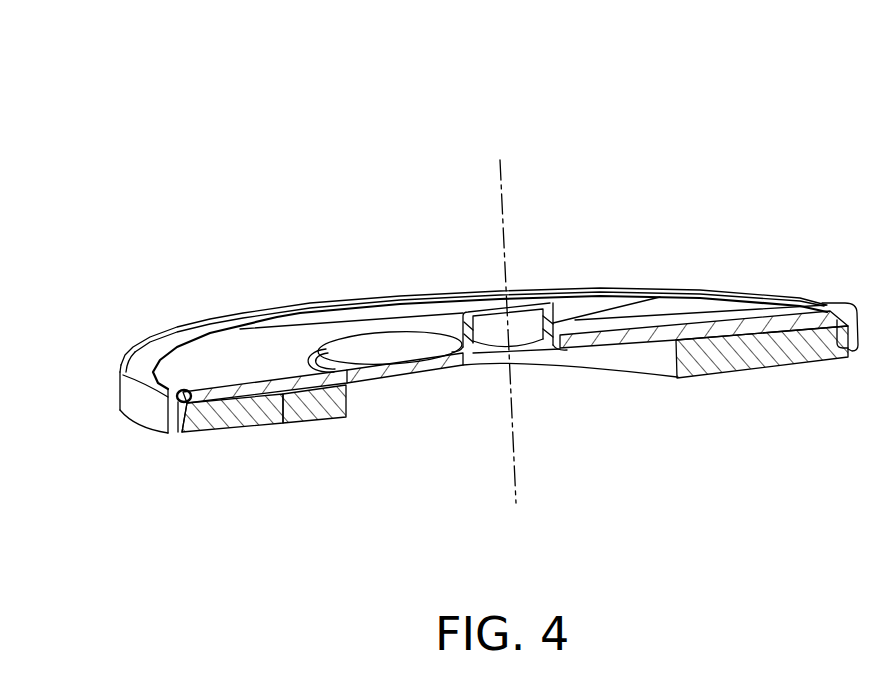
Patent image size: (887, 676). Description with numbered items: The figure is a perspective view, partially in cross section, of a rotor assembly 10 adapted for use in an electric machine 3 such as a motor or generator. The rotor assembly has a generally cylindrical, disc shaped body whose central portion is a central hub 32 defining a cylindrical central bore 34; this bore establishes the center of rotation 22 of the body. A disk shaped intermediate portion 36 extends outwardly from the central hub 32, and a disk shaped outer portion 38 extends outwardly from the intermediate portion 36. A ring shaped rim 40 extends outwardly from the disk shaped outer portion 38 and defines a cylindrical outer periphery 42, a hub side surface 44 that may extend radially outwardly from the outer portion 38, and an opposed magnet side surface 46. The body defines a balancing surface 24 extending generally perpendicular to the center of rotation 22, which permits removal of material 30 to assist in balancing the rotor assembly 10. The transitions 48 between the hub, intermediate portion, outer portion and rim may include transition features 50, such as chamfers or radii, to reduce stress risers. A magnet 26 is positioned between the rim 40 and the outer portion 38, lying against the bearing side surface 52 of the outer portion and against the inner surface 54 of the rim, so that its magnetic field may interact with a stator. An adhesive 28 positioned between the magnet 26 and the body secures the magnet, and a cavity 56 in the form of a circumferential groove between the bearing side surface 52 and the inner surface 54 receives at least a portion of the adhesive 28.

The rotor assembly 10 is at (178, 92).
The electric machine 3 is at (767, 86).
The center of rotation 22 is at (520, 485).
The balancing surface 24 is at (121, 362).
The magnet 26 is at (340, 423).
The adhesive 28 is at (178, 432).
The material 30 is at (173, 337).
The central hub 32 is at (552, 306).
The central bore 34 is at (526, 280).
The intermediate portion 36 is at (433, 336).
The outer portion 38 is at (227, 347).
The rim 40 is at (108, 370).
The cylindrical outer periphery 42 is at (118, 392).
The hub side surface 44 is at (140, 345).
The magnet side surface 46 is at (133, 423).
The transitions 48 is at (822, 303).
The transition features 50 is at (318, 352).
The bearing side surface 52 is at (283, 423).
The inner surface 54 is at (195, 442).
The cavity 56 is at (198, 418).